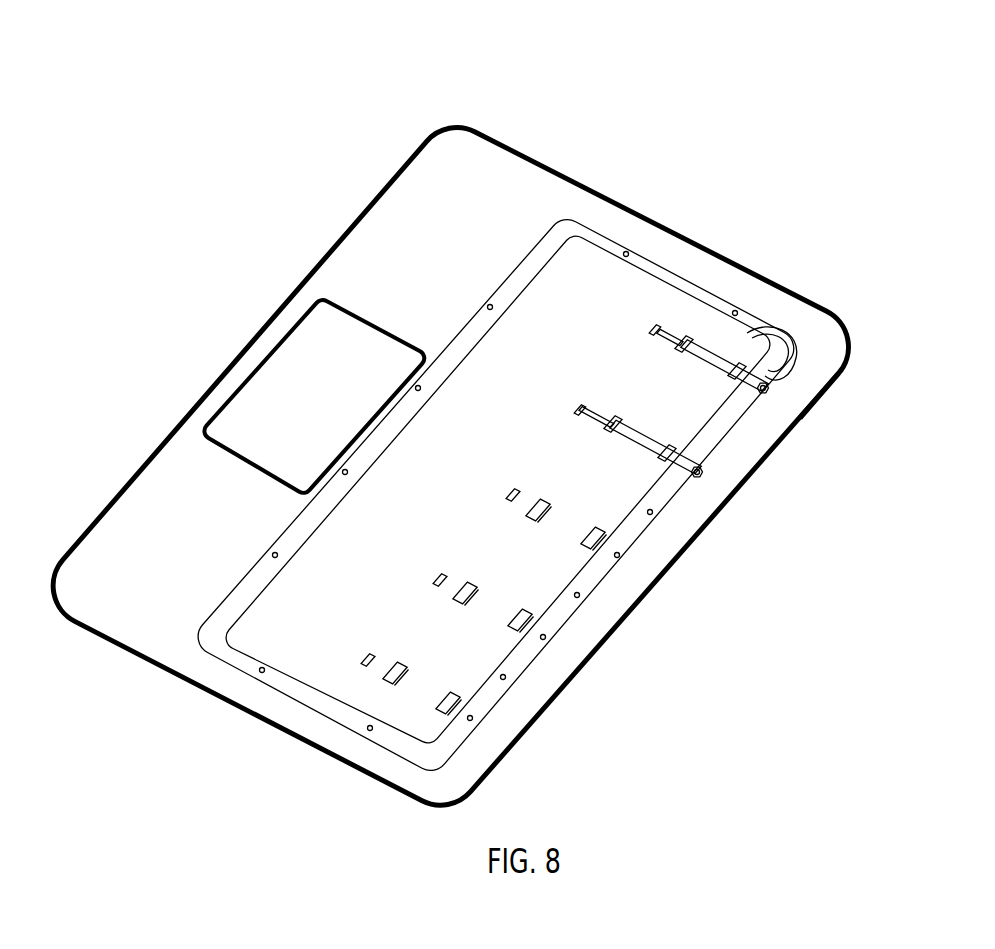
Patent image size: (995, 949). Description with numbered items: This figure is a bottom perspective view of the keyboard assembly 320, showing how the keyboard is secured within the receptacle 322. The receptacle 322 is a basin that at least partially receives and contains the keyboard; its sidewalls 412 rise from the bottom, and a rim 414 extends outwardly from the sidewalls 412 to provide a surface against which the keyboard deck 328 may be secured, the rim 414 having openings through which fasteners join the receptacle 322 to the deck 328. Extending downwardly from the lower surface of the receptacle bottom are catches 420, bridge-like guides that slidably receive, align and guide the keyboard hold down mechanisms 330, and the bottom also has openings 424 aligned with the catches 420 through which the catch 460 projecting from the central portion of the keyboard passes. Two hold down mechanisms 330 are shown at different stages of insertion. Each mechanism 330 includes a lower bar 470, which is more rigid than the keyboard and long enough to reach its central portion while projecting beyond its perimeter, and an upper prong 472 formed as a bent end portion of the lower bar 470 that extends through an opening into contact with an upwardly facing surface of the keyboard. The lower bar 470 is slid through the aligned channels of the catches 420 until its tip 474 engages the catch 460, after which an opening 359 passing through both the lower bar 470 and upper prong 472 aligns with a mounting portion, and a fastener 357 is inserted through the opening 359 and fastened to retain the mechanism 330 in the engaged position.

The keyboard assembly 320 is at (461, 435).
The receptacle 322 is at (496, 482).
The keyboard deck 328 is at (487, 150).
The keyboard hold down mechanism 330 is at (694, 381).
The fastener 357 is at (786, 405).
The opening 359 is at (703, 480).
The sidewalls 412 is at (657, 272).
The rim 414 is at (688, 283).
The catches 420 is at (388, 680).
The openings 424 is at (437, 578).
The catch 460 is at (658, 338).
The lower bar 470 is at (688, 352).
The upper prong 472 is at (820, 398).
The tip 474 is at (650, 326).